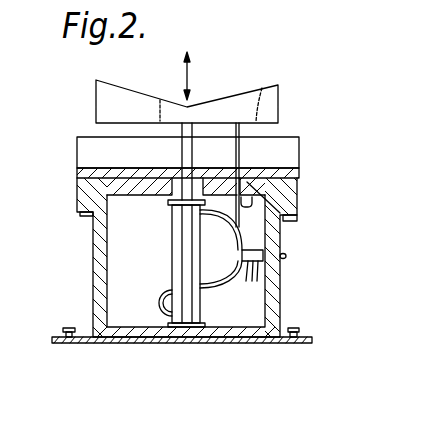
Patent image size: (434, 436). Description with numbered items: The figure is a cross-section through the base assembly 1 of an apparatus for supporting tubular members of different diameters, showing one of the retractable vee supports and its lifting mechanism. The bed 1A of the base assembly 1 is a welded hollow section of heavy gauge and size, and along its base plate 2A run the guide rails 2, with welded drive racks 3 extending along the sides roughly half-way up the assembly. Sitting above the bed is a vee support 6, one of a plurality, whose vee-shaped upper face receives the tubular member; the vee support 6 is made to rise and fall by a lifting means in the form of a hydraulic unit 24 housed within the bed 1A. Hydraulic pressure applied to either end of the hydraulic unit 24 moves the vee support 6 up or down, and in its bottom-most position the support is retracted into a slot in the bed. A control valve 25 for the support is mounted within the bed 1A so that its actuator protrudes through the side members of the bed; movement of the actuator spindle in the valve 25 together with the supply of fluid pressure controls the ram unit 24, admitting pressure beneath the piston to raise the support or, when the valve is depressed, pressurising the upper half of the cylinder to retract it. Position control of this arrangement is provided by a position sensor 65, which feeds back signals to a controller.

The base assembly 1 is at (66, 153).
The bed 1A is at (93, 290).
The guide rails 2 is at (62, 328).
The base plate 2A is at (253, 344).
The drive racks 3 is at (80, 220).
The vee support 6 is at (228, 105).
The hydraulic unit 24 is at (173, 246).
The control valve 25 is at (284, 257).
The position sensor 65 is at (250, 197).